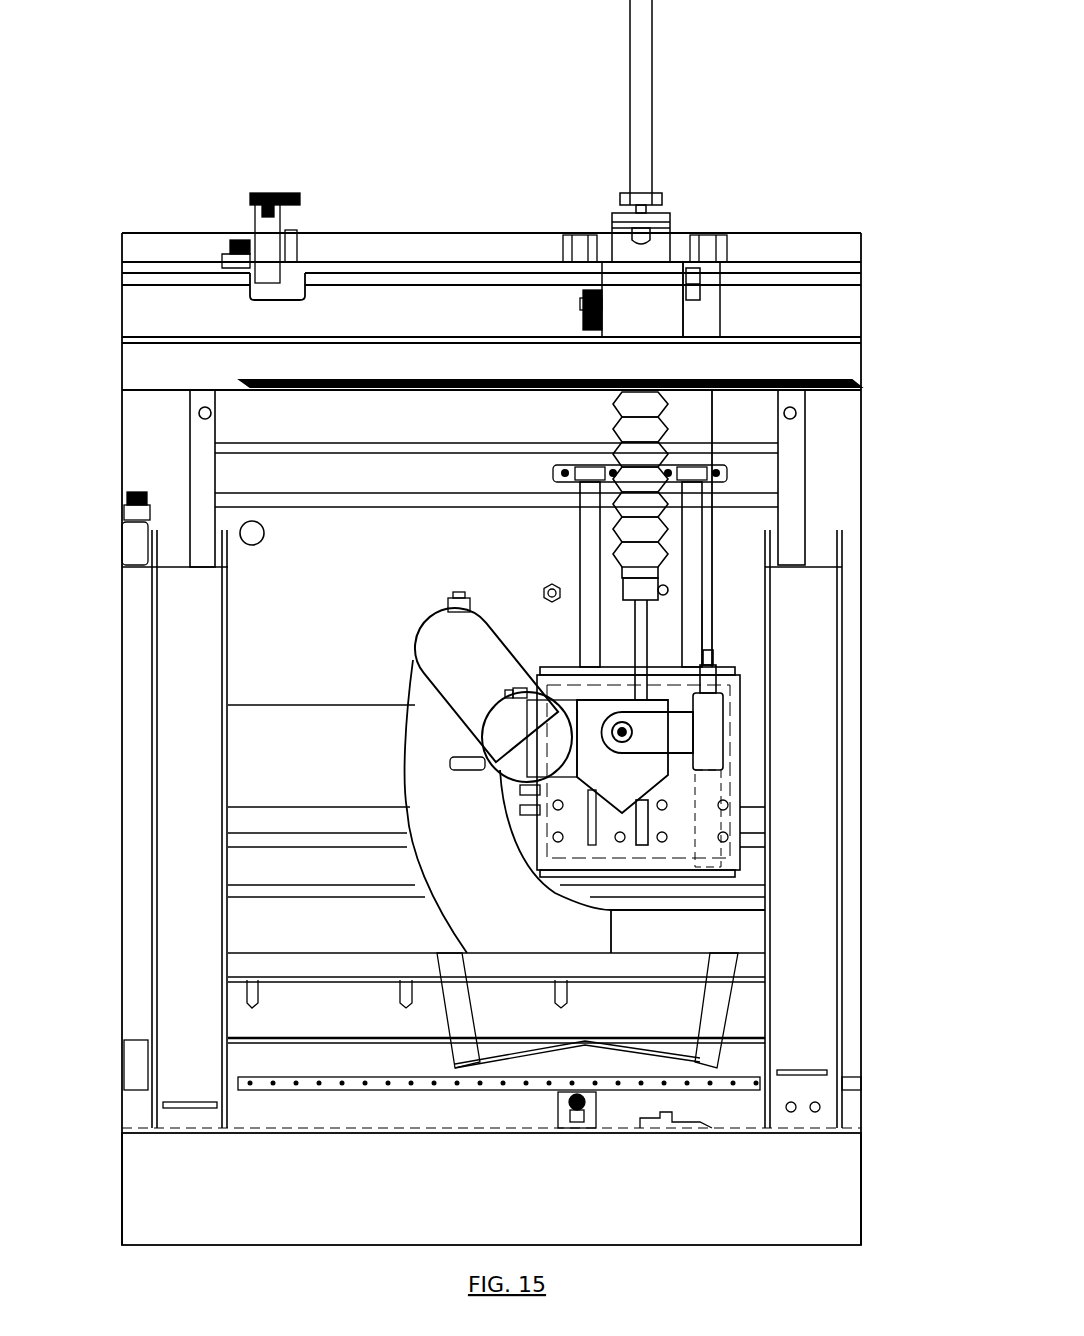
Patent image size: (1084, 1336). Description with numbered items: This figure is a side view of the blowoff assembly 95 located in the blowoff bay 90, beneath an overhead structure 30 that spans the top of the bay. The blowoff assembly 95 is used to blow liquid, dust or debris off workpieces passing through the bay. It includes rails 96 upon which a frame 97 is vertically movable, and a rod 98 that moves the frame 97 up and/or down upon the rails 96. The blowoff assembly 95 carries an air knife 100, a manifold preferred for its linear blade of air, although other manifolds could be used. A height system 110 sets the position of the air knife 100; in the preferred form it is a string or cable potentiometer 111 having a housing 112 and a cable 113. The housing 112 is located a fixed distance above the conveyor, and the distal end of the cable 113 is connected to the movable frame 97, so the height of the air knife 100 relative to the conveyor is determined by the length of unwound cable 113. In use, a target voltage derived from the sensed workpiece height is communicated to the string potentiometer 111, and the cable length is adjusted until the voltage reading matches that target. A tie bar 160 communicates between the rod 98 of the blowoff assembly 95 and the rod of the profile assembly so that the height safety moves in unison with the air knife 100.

The overhead structure 30 is at (298, 335).
The tie bar 160 is at (472, 230).
The housing 112 is at (640, 262).
The height system 110 is at (643, 287).
The string or cable potentiometer 111 is at (655, 318).
The blowoff bay 90 is at (325, 527).
The rails 96 is at (703, 530).
The cable 113 is at (713, 583).
The frame 97 is at (680, 663).
The rod 98 is at (647, 827).
The blowoff assembly 95 is at (420, 632).
The air knife 100 is at (625, 820).